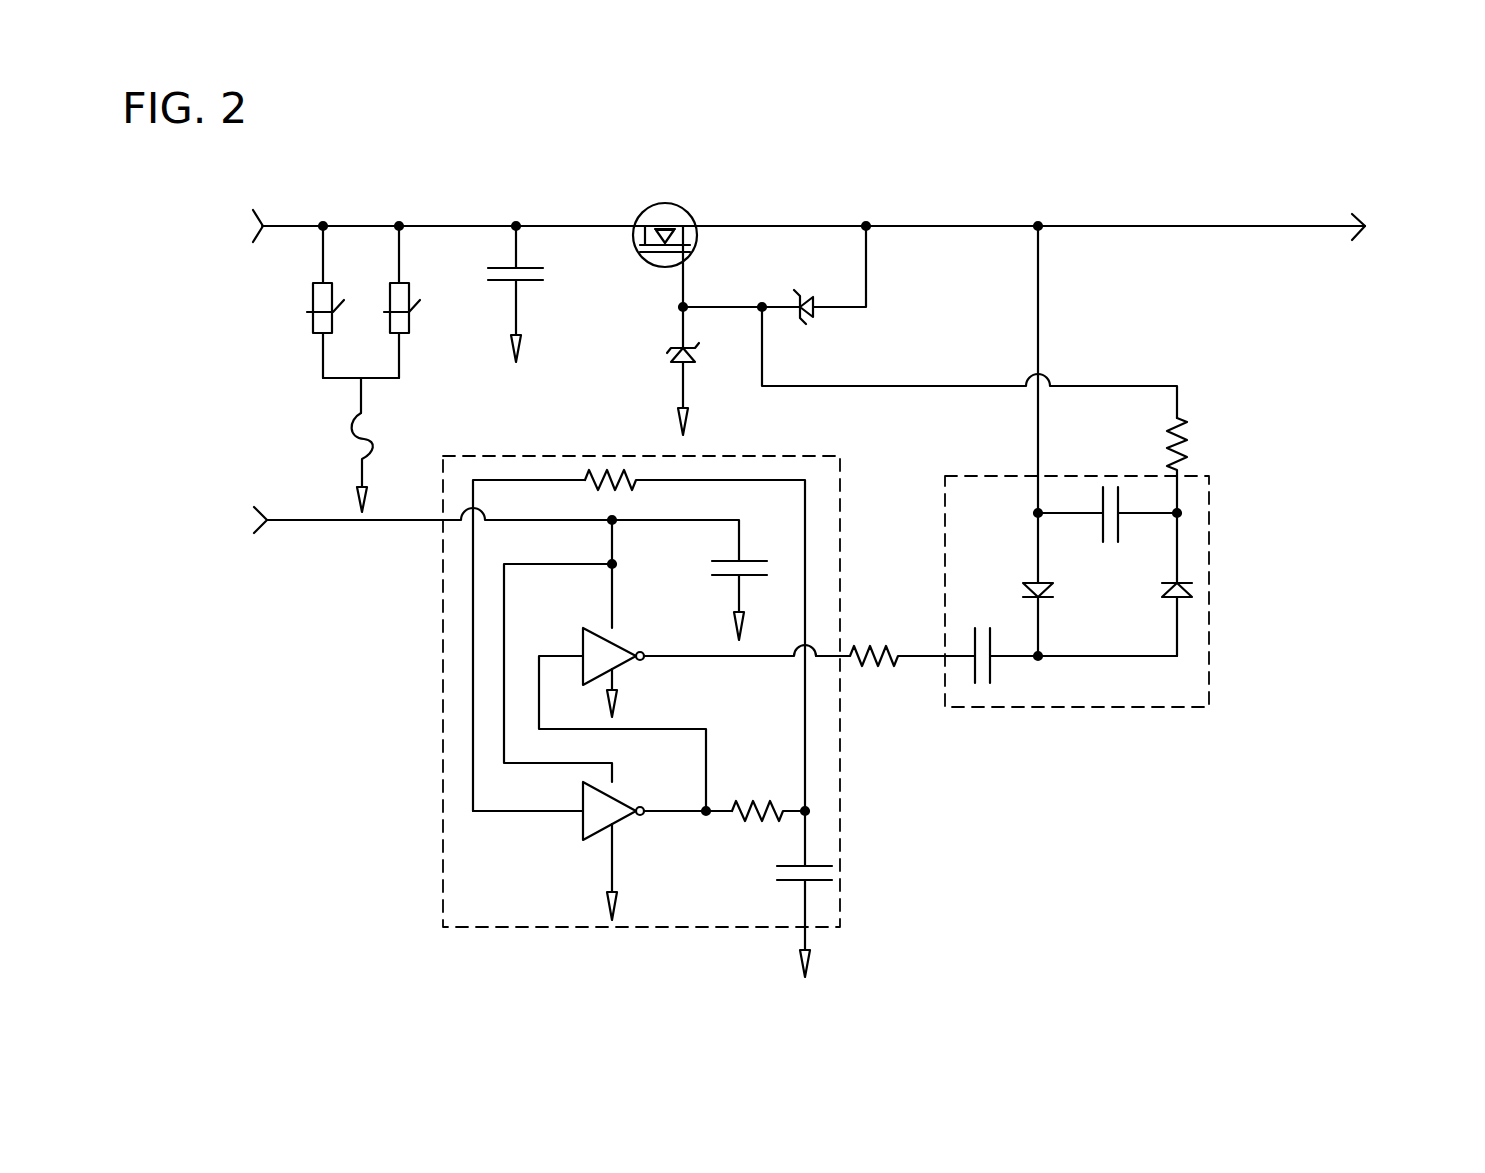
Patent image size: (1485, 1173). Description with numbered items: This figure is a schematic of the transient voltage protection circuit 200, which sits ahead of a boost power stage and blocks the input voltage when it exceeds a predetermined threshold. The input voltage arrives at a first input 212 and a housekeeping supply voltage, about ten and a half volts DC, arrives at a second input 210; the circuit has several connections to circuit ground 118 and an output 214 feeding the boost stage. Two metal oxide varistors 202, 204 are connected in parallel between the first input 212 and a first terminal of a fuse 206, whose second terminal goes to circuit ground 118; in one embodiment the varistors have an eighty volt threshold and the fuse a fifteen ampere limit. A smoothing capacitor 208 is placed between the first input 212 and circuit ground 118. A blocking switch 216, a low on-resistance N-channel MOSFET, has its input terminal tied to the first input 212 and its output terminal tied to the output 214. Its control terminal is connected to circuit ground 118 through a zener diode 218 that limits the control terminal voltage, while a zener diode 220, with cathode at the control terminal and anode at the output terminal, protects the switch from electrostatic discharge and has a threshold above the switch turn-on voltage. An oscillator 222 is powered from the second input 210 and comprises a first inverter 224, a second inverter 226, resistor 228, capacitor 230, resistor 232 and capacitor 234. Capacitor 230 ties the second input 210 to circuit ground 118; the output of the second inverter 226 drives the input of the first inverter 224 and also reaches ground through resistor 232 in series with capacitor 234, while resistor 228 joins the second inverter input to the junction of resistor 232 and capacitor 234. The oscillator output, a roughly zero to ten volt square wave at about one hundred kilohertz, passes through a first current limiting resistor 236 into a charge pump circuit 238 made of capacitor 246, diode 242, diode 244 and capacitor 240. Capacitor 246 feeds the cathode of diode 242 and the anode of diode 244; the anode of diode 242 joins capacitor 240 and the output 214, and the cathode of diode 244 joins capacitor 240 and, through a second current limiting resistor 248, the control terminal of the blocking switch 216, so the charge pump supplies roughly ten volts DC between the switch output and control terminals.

The transient voltage protection circuit 200 is at (1227, 165).
The metal oxide varistor 202 is at (312, 294).
The metal oxide varistor 204 is at (411, 293).
The fuse 206 is at (366, 438).
The smoothing capacitor 208 is at (519, 301).
The second input 210 is at (262, 533).
The first input 212 is at (262, 224).
The output 214 is at (1366, 232).
The blocking switch 216 is at (681, 204).
The zener diode 218 is at (672, 346).
The zener diode 220 is at (804, 296).
The oscillator 222 is at (443, 705).
The first inverter 224 is at (623, 648).
The second inverter 226 is at (623, 803).
The resistor 228 is at (601, 468).
The capacitor 230 is at (740, 541).
The resistor 232 is at (753, 800).
The capacitor 234 is at (803, 858).
The first current limiting resistor 236 is at (866, 638).
The charge pump circuit 238 is at (1210, 527).
The capacitor 240 is at (1083, 516).
The diode 242 is at (1031, 580).
The diode 244 is at (1193, 588).
The capacitor 246 is at (1005, 660).
The second current limiting resistor 248 is at (1187, 435).
The circuit ground 118 is at (811, 965).